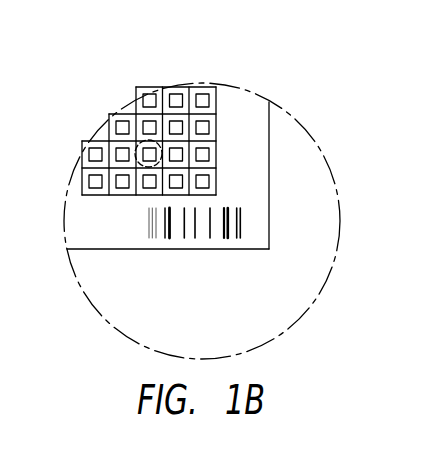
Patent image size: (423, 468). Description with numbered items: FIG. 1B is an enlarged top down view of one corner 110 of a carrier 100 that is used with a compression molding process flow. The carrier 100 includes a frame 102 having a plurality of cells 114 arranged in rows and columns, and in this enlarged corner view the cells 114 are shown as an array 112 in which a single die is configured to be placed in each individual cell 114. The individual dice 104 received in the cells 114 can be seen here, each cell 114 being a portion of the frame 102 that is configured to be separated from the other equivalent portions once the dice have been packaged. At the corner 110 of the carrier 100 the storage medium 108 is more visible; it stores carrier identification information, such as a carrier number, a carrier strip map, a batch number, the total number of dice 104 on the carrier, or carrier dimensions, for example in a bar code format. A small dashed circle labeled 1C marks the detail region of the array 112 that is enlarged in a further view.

The carrier 100 is at (248, 160).
The frame 102 is at (167, 80).
The die 104 is at (204, 98).
The storage medium 108 is at (202, 245).
The corner 110 is at (269, 249).
The array 112 is at (228, 130).
The cell 114 is at (213, 101).
The detail region shown in FIG. 1C is at (141, 143).